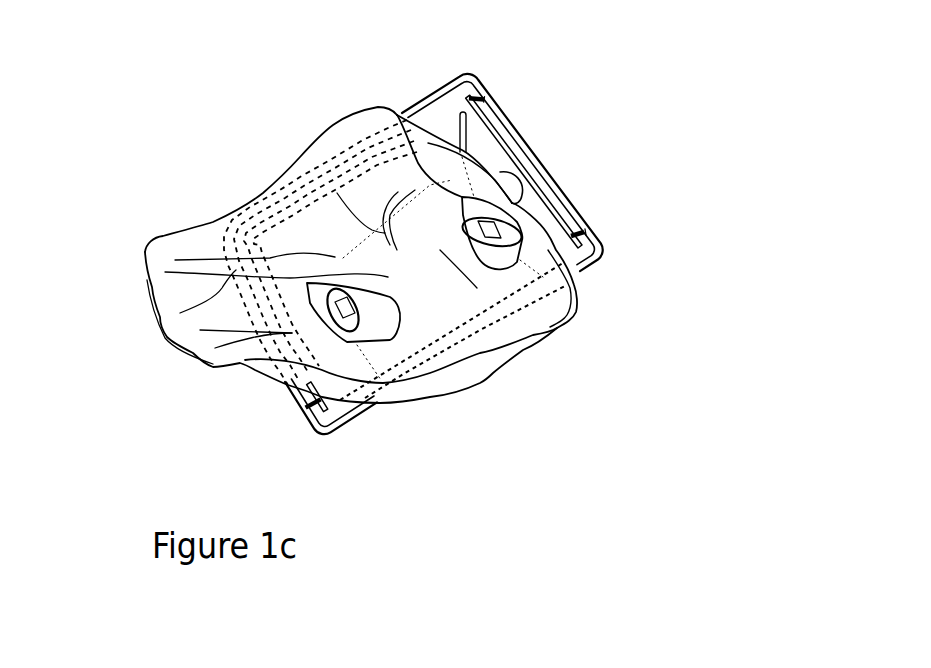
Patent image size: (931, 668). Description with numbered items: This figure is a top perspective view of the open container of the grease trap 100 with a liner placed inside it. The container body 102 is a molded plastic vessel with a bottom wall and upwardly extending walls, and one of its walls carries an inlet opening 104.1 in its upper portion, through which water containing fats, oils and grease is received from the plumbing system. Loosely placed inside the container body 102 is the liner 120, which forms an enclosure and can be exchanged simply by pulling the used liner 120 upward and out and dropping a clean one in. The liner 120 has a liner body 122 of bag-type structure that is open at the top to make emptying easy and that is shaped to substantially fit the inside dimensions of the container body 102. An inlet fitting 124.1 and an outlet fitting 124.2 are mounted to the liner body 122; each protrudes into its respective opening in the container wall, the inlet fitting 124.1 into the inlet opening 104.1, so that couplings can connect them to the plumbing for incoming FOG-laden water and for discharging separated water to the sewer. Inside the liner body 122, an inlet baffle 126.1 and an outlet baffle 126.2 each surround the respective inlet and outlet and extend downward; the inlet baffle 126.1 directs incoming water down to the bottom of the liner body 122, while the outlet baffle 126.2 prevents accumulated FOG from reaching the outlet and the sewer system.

The grease trap 100 is at (650, 61).
The container body 102 is at (452, 126).
The inlet opening 104.1 is at (350, 317).
The liner 120 is at (256, 169).
The liner body 122 is at (327, 160).
The inlet fitting 124.1 is at (355, 330).
The outlet fitting 124.2 is at (523, 238).
The inlet baffle 126.1 is at (370, 302).
The outlet baffle 126.2 is at (488, 255).